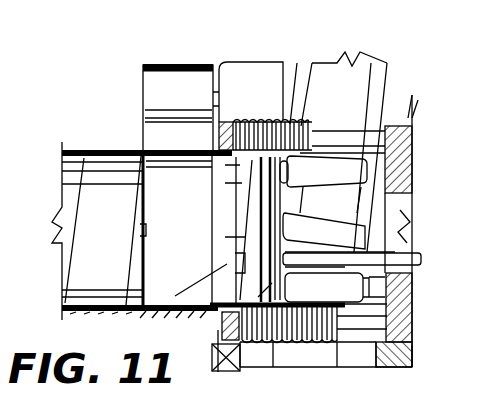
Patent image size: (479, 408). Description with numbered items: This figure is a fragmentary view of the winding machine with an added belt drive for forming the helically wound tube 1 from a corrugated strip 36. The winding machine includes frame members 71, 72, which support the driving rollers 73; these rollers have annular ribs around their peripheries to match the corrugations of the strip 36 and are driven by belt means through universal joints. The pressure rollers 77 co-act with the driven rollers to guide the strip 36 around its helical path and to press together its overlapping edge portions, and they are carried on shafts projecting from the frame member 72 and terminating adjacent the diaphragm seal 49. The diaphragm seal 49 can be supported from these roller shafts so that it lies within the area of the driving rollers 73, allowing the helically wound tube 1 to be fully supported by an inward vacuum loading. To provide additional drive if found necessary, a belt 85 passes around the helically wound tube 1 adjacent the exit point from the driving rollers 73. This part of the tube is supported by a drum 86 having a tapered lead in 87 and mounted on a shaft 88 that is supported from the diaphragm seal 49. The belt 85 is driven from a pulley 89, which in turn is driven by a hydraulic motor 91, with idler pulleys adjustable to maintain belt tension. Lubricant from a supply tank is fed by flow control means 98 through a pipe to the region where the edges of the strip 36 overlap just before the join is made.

The helically wound tube 1 is at (113, 148).
The belt 85 is at (192, 66).
The pulley 89 is at (160, 90).
The hydraulic motor 91 is at (261, 86).
The driving rollers 73 is at (263, 118).
The strip 36 is at (367, 63).
The frame member 72 is at (412, 114).
The pressure rollers 77 is at (350, 164).
The drum 86 is at (198, 214).
The shaft 88 is at (245, 223).
The tapered lead in 87 is at (138, 313).
The frame member 71 is at (214, 329).
The diaphragm seal 49 is at (221, 364).
The flow control means 98 is at (445, 374).